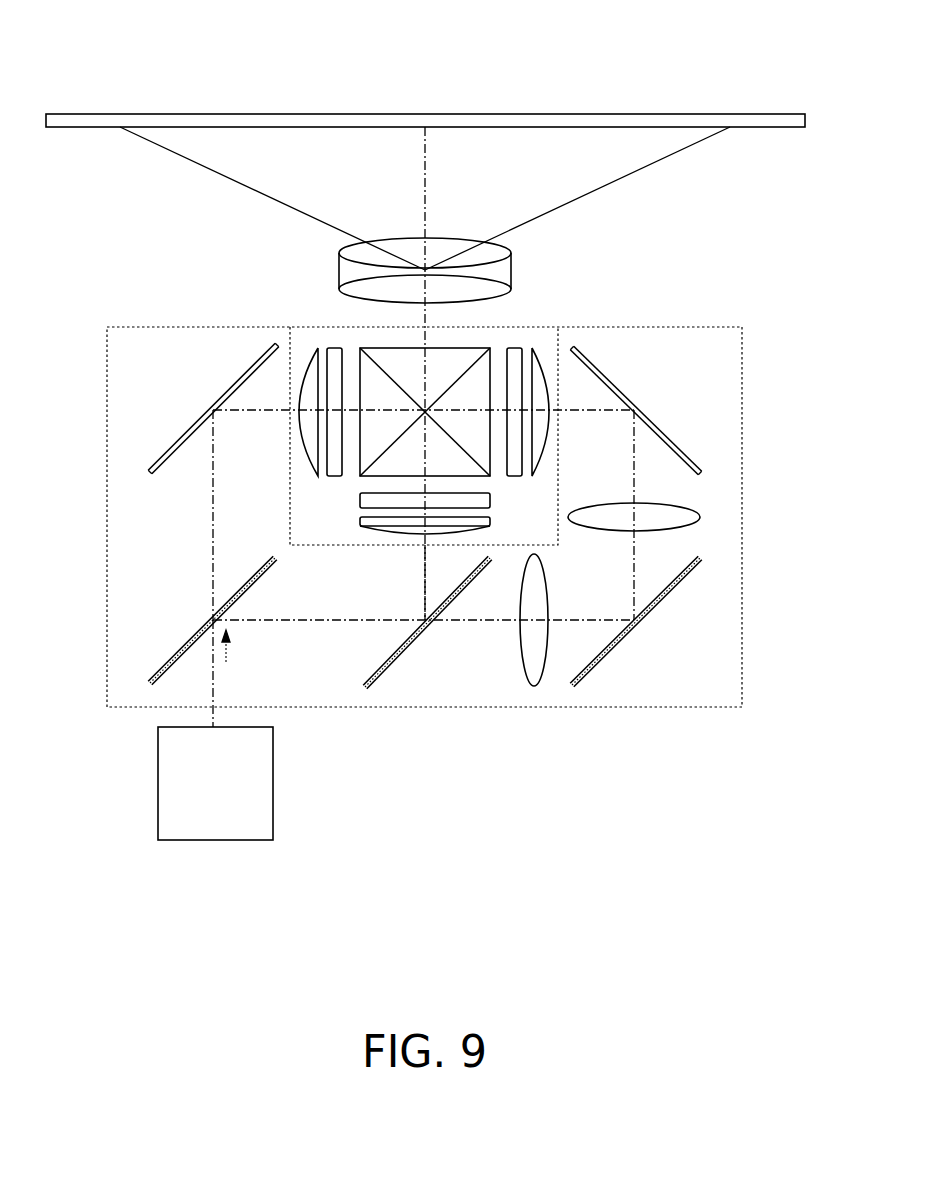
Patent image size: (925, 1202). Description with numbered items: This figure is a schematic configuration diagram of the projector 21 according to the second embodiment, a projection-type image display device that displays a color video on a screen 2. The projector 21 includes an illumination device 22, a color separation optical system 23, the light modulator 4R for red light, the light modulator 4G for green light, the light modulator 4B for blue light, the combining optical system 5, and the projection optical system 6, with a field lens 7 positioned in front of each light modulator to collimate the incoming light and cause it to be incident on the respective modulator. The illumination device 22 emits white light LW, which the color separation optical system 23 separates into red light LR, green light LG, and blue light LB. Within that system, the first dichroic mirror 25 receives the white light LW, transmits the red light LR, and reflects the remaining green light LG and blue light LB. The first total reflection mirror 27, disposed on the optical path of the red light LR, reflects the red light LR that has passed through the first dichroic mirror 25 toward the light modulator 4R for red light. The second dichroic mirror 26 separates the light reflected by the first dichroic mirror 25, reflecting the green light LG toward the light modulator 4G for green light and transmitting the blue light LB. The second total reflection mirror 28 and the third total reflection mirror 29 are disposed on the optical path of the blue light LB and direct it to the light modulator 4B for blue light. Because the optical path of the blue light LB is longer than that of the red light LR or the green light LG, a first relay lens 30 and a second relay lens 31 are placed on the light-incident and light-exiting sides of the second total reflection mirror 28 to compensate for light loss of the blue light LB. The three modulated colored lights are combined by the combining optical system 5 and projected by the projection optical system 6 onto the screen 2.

The screen 2 is at (162, 113).
The projection optical system 6 is at (408, 250).
The combining optical system 5 is at (445, 355).
The light modulator for red light 4R is at (333, 346).
The light modulator for green light 4G is at (360, 500).
The light modulator for blue light 4B is at (515, 346).
The field lens 7 is at (313, 345).
The color separation optical system 23 is at (106, 462).
The first total reflection mirror 27 is at (195, 428).
The third total reflection mirror 29 is at (662, 428).
The first dichroic mirror 25 is at (178, 647).
The second dichroic mirror 26 is at (403, 653).
The second total reflection mirror 28 is at (658, 603).
The first relay lens 30 is at (523, 640).
The second relay lens 31 is at (688, 504).
The illumination device 22 is at (273, 780).
The projector 21 is at (462, 810).
The red light LR is at (213, 537).
The green light LG is at (424, 578).
The blue light LB is at (632, 568).
The white light LW is at (232, 668).